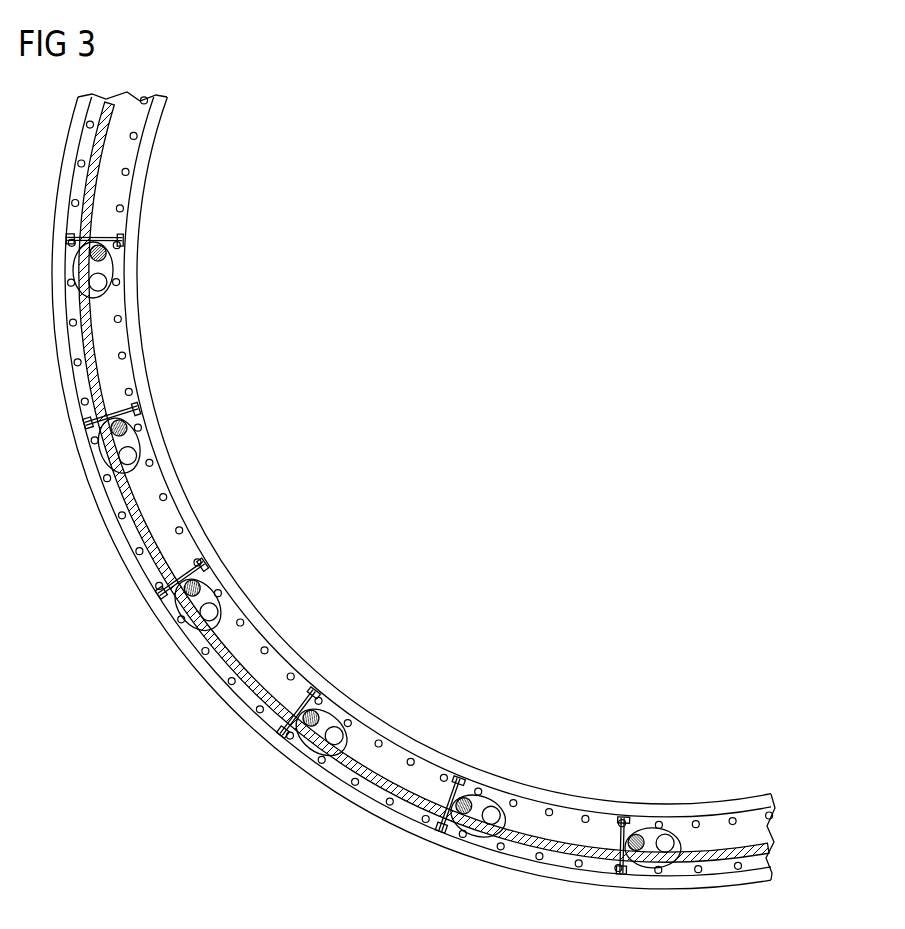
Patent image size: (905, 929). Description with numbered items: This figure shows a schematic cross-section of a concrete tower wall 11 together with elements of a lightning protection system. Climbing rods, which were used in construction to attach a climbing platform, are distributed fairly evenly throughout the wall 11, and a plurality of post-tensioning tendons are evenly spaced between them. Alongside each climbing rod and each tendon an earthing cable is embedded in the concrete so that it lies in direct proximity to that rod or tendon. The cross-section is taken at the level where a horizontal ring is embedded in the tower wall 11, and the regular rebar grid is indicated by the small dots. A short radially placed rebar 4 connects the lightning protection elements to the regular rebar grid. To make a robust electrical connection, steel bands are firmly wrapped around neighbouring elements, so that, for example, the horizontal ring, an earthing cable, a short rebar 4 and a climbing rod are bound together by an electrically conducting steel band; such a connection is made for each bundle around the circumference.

The short radially placed rebar 4 is at (112, 238).
The concrete tower wall 11 is at (770, 832).